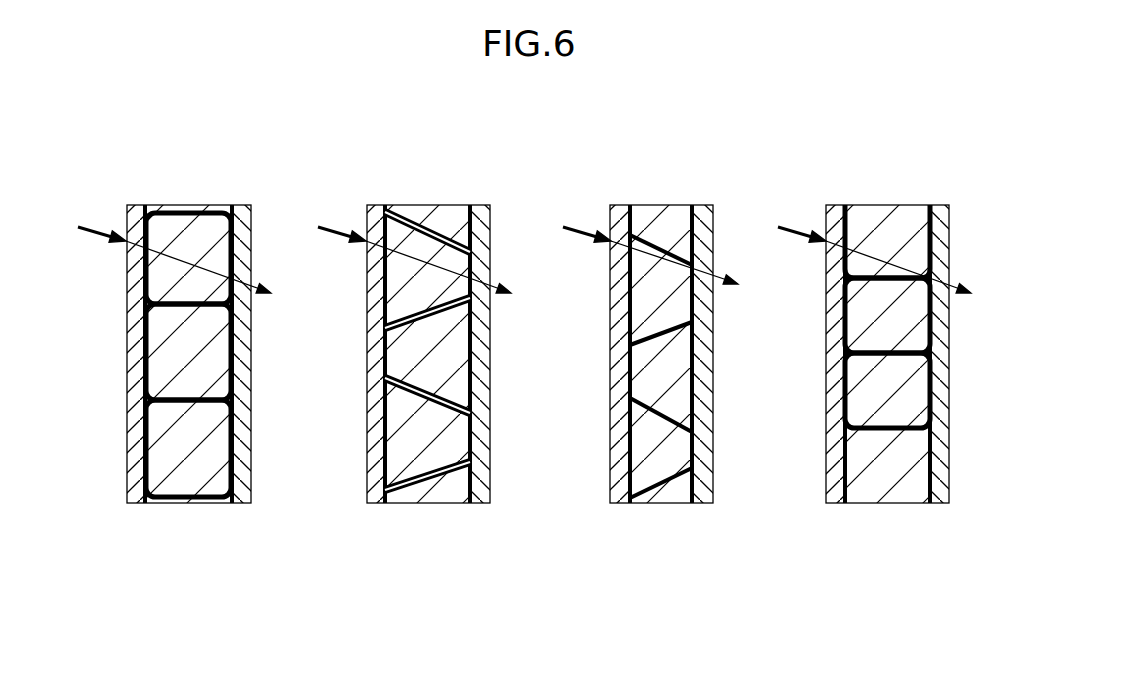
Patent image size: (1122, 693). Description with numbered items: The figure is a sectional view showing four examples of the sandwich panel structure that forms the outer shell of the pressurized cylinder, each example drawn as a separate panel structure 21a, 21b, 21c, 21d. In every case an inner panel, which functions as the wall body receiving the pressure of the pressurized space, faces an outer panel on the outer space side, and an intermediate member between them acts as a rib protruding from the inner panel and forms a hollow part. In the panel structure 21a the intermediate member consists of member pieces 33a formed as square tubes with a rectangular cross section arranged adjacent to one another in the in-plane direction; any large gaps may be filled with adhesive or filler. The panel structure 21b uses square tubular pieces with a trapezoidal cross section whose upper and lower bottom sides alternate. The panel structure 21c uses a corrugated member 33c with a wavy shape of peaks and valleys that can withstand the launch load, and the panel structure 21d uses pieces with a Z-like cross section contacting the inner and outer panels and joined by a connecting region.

The panel structure 21a is at (222, 174).
The panel structure 21b is at (462, 174).
The panel structure 21c is at (700, 184).
The panel structure 21d is at (919, 174).
The member pieces 33a is at (187, 503).
The corrugated member 33c is at (660, 448).